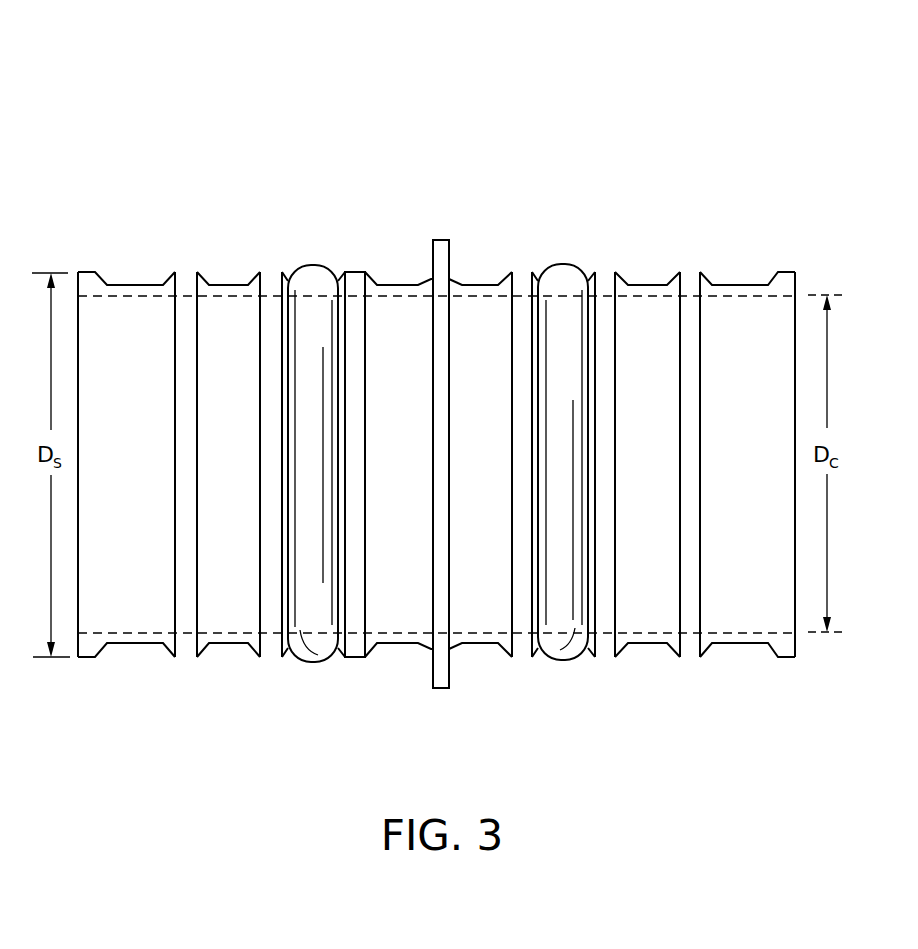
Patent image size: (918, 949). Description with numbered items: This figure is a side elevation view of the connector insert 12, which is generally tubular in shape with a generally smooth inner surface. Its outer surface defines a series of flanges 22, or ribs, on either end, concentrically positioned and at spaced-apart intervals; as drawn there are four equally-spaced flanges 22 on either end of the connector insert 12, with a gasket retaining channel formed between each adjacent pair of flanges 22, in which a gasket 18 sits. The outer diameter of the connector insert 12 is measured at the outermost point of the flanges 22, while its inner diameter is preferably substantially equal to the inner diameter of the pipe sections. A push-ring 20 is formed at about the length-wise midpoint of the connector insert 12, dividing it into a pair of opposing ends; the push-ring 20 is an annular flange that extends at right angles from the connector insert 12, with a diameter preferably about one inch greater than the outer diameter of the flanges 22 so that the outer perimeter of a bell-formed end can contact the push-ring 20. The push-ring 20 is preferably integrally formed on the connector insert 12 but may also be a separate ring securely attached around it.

The connector insert 12 is at (421, 136).
The gasket 18 is at (318, 264).
The push-ring 20 is at (441, 240).
The flange 22 is at (358, 270).